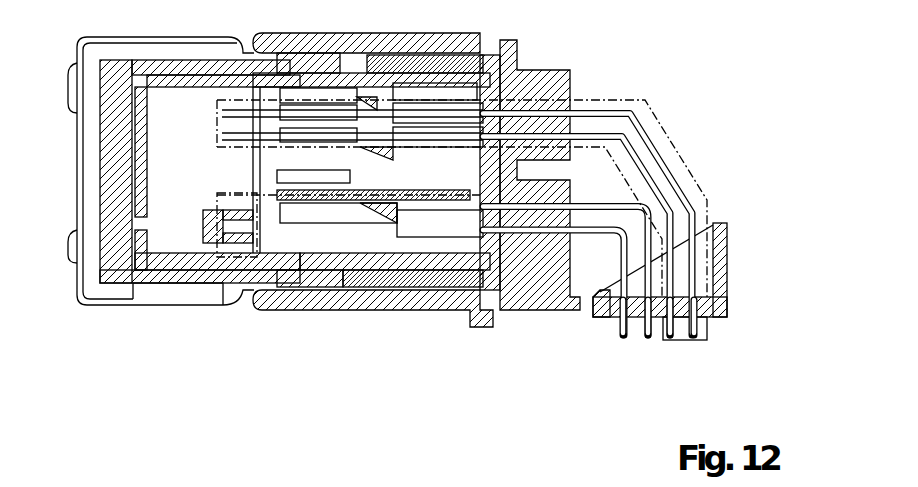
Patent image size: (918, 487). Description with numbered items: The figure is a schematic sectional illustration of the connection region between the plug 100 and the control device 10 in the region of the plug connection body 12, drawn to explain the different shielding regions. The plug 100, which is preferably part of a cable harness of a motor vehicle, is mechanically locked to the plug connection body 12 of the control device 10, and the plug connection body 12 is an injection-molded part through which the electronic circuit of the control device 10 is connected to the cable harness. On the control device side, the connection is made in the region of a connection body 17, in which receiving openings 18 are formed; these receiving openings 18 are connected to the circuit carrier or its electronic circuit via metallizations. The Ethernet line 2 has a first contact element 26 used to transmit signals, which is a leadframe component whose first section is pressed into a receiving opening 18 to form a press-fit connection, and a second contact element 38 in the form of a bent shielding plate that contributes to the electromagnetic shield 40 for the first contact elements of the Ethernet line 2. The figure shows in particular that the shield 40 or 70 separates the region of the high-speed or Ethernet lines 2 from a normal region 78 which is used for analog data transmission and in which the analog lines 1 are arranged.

The analog line 1 is at (222, 135).
The Ethernet line 2 is at (203, 220).
The control device 10 is at (434, 204).
The plug connection body 12 is at (548, 82).
The connection body 17 is at (727, 280).
The receiving opening 18 is at (622, 318).
The first contact element 26 is at (598, 236).
The second contact element 38 is at (600, 203).
The electromagnetic shield 40 is at (376, 196).
The shield 70 is at (373, 255).
The normal region 78 is at (661, 131).
The plug 100 is at (192, 297).